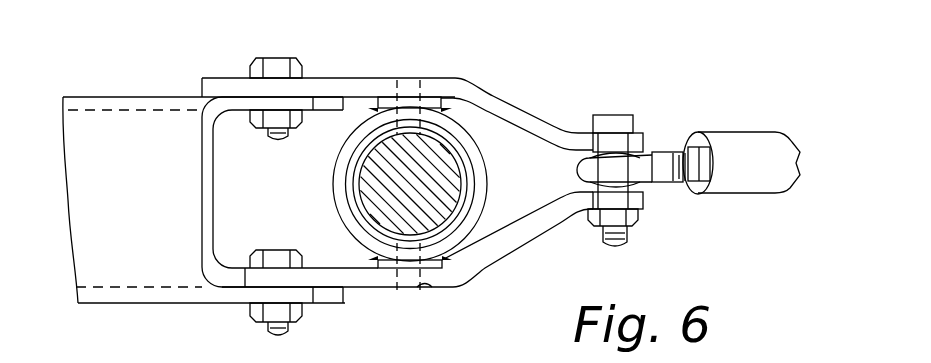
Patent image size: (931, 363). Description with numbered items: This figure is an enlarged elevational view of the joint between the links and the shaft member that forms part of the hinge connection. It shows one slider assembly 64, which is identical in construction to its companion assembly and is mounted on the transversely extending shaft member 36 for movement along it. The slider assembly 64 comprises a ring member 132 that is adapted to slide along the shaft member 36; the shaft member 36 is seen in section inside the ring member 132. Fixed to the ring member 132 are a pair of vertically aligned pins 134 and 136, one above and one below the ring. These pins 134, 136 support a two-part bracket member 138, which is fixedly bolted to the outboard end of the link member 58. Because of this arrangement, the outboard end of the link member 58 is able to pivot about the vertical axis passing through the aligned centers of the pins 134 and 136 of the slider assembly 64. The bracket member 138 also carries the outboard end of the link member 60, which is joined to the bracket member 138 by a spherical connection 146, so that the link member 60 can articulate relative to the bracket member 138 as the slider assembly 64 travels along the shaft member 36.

The shaft member 36 is at (382, 195).
The link member 58 is at (112, 278).
The link member 60 is at (742, 137).
The slider assembly 64 is at (522, 97).
The ring member 132 is at (487, 186).
The pin 134 is at (427, 73).
The pin 136 is at (438, 293).
The bracket member 138 is at (548, 124).
The spherical connection 146 is at (616, 145).